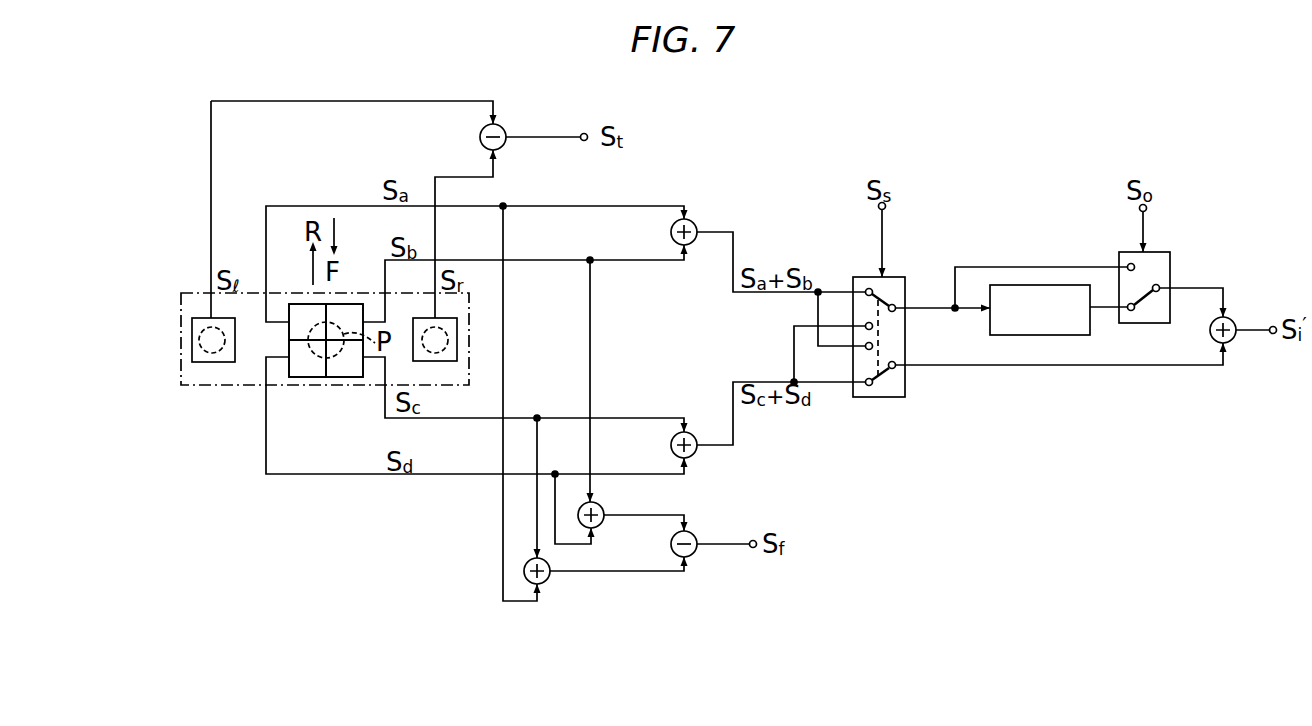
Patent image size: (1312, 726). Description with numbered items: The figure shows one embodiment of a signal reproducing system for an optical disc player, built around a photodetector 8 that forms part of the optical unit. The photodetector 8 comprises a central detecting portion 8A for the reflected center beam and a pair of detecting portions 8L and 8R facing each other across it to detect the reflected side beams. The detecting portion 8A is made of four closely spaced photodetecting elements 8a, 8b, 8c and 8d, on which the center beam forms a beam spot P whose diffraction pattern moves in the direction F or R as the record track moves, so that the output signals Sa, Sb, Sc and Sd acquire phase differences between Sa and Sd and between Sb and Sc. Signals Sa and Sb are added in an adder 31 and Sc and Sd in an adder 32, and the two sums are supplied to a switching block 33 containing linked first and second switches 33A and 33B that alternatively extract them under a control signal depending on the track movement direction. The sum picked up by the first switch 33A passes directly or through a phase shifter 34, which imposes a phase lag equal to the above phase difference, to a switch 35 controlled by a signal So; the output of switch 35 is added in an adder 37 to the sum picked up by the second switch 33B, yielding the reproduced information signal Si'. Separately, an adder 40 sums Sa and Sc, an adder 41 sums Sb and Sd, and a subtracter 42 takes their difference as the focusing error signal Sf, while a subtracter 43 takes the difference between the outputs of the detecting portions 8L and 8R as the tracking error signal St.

The photodetector 8 is at (213, 385).
The detecting portion 8L is at (200, 318).
The detecting portion 8R is at (445, 361).
The detecting portion 8A is at (326, 386).
The photodetecting element 8a is at (297, 304).
The photodetecting element 8b is at (347, 304).
The photodetecting element 8c is at (352, 377).
The photodetecting element 8d is at (300, 377).
The adder 31 is at (694, 222).
The adder 32 is at (693, 455).
The switching block 33 is at (899, 341).
The first switch 33A is at (883, 293).
The second switch 33B is at (884, 372).
The phase shifter 34 is at (986, 326).
The switch 35 is at (1158, 252).
The adder 37 is at (1233, 342).
The adder 40 is at (548, 581).
The adder 41 is at (603, 510).
The subtracter 42 is at (694, 554).
The subtracter 43 is at (502, 126).